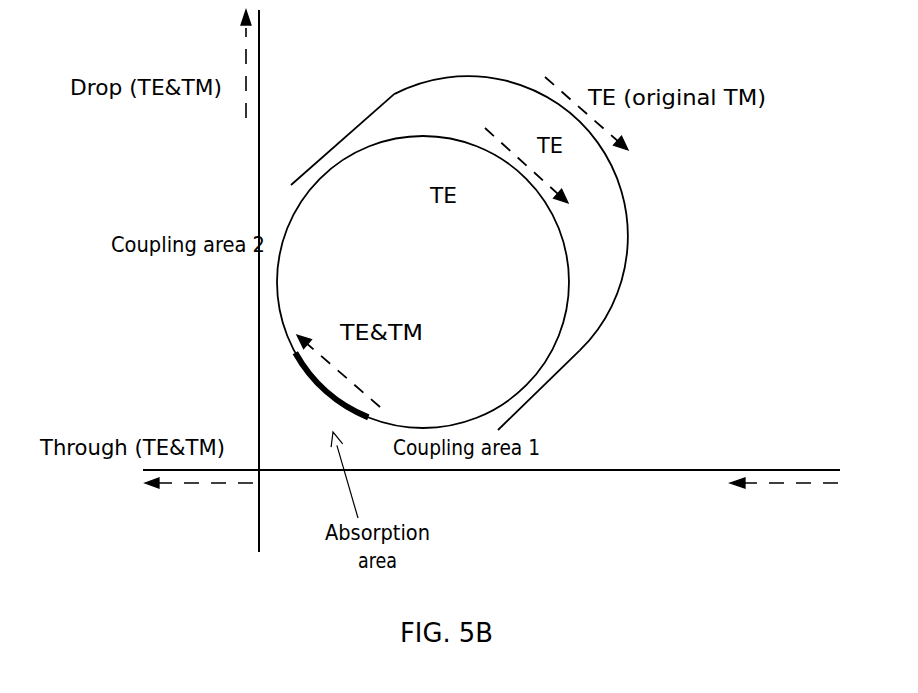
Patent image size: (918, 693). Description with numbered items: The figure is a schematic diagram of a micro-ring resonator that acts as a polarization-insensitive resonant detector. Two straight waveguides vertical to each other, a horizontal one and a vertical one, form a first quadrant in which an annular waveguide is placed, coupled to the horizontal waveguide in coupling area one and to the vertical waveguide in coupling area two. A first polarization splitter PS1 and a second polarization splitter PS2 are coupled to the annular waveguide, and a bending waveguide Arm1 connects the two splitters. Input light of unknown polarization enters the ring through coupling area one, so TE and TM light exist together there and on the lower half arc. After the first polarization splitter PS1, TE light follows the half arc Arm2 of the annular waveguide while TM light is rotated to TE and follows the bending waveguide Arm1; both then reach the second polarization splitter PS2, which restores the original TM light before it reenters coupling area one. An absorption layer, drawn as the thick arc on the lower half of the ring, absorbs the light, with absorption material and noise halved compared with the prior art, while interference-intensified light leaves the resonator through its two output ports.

The first polarization splitter PS1 is at (342, 139).
The second polarization splitter PS2 is at (544, 393).
The bending waveguide Arm1 is at (541, 213).
The annular waveguide half arc Arm2 is at (423, 282).